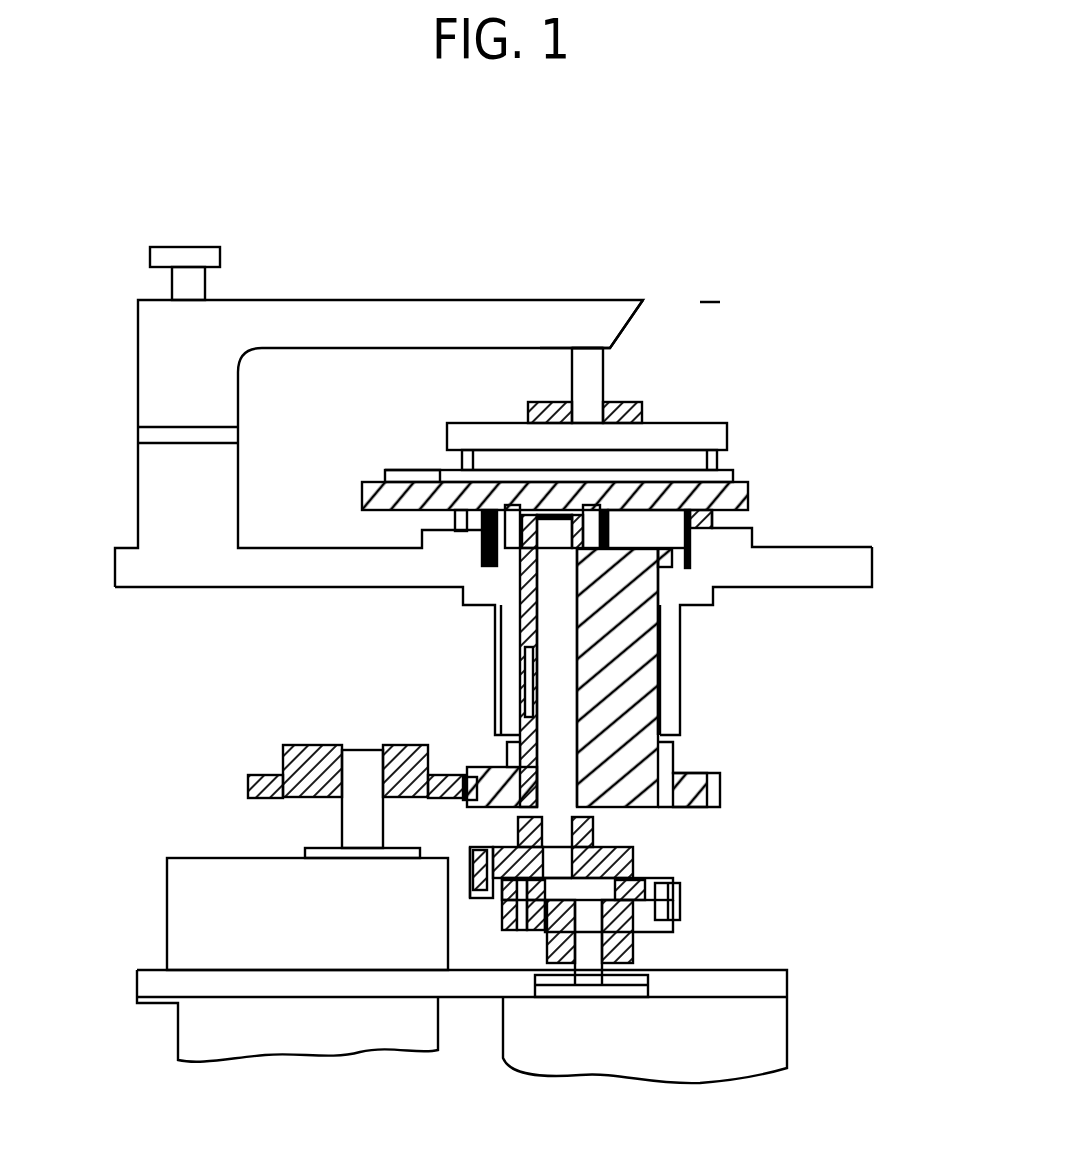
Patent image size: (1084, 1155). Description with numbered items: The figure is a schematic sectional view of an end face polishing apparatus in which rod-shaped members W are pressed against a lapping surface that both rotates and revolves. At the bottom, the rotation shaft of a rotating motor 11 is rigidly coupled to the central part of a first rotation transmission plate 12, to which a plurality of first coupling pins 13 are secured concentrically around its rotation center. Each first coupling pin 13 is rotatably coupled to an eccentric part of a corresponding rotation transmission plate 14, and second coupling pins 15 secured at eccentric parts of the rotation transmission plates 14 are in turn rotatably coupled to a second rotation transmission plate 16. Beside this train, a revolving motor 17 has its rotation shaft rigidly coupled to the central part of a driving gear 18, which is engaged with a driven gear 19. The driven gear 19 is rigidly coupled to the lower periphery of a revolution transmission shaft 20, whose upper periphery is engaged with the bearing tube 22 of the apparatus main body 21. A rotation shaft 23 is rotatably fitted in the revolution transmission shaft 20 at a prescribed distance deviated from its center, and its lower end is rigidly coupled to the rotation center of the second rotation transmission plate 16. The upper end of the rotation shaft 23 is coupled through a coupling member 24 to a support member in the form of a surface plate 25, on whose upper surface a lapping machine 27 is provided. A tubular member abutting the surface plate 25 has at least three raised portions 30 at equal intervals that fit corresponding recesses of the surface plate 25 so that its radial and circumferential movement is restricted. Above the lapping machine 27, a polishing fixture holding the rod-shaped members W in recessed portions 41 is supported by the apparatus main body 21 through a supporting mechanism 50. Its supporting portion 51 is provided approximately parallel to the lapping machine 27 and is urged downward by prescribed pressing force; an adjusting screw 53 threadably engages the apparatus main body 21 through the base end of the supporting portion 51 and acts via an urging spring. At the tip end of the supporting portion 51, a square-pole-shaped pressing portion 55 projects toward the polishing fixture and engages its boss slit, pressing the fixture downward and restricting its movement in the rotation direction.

The rotating motor 11 is at (757, 1053).
The first rotation transmission plate 12 is at (633, 963).
The first coupling pins 13 is at (673, 915).
The rotation transmission plates 14 is at (680, 888).
The second coupling pins 15 is at (485, 897).
The second rotation transmission plate 16 is at (640, 865).
The revolving motor 17 is at (190, 938).
The driving gear 18 is at (287, 745).
The driven gear 19 is at (720, 803).
The revolution transmission shaft 20 is at (633, 770).
The apparatus main body 21 is at (162, 575).
The bearing tube 22 is at (670, 662).
The rotation shaft 23 is at (552, 667).
The coupling member 24 is at (515, 532).
The surface plate 25 is at (748, 495).
The lapping machine 27 is at (417, 468).
The raised portions 30 is at (727, 440).
The recessed portion 41 is at (528, 418).
The supporting mechanism 50 is at (716, 308).
The supporting portion 51 is at (542, 327).
The adjusting screw 53 is at (188, 262).
The pressing portion 55 is at (588, 398).
The rod-shaped member W is at (723, 468).